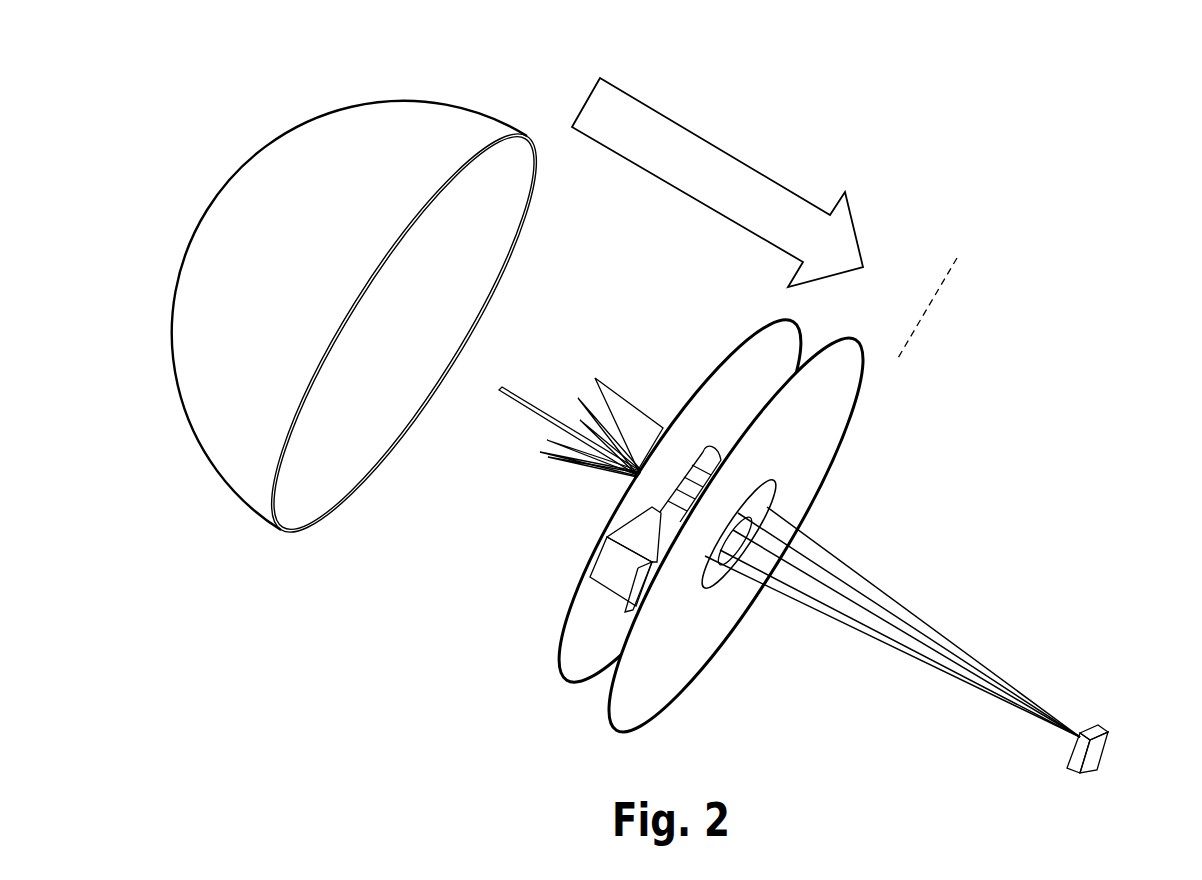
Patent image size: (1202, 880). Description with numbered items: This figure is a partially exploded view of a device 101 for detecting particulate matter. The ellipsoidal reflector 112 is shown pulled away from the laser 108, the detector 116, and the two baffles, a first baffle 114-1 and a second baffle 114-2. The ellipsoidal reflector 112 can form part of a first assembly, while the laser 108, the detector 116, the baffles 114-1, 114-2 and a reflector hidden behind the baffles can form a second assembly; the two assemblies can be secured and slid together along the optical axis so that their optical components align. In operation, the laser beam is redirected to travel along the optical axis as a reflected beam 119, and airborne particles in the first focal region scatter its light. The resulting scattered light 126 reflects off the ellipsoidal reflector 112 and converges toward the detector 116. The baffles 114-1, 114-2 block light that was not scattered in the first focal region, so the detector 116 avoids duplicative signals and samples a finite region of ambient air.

The device for detecting particulate matter 101 is at (980, 313).
The laser 108 is at (598, 567).
The ellipsoidal reflector 112 is at (292, 130).
The baffle 114-1 is at (569, 683).
The baffle 114-2 is at (614, 731).
The detector 116 is at (1106, 748).
The reflected beam 119 is at (528, 403).
The scattered light 126 is at (585, 385).